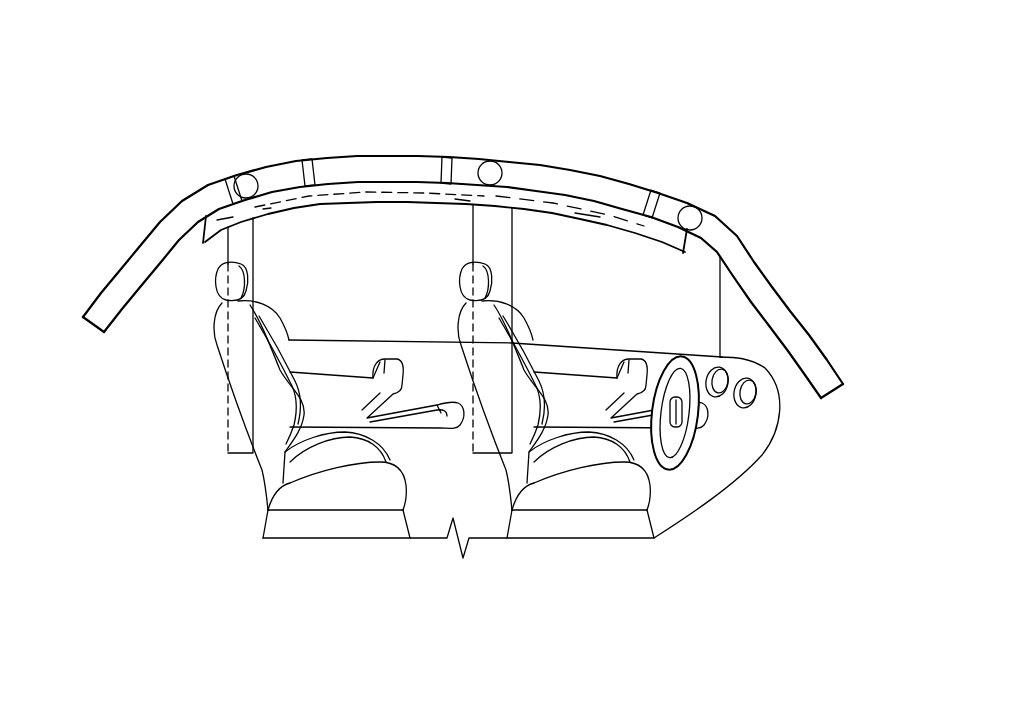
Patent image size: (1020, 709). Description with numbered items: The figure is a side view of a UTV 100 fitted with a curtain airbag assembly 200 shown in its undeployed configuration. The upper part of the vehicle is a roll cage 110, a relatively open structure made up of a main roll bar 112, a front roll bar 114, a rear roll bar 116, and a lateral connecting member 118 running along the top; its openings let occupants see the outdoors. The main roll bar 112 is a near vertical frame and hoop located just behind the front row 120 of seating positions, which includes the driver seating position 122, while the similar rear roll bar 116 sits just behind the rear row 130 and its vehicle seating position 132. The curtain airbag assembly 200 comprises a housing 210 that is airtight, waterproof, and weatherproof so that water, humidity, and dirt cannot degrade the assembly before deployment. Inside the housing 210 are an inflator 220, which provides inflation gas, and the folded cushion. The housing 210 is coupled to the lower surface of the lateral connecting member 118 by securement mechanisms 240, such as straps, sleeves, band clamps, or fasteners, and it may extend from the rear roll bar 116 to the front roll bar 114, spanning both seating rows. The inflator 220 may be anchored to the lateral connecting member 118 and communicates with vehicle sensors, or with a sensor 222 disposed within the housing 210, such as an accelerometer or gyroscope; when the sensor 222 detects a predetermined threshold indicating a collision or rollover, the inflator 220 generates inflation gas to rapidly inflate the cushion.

The UTV 100 is at (141, 39).
The roll cage 110 is at (476, 277).
The main roll bar 112 is at (488, 187).
The front roll bar 114 is at (691, 207).
The rear roll bar 116 is at (248, 173).
The lateral connecting member 118 is at (367, 181).
The front row of vehicle seating positions 120 is at (589, 426).
The driver seating position 122 is at (553, 426).
The rear row of vehicle seating positions 130 is at (322, 426).
The vehicle seating position 132 is at (260, 467).
The curtain airbag assembly 200 is at (614, 155).
The housing 210 is at (530, 197).
The inflator 220 is at (457, 197).
The sensor 222 is at (398, 197).
The securement mechanism 240 is at (206, 215).